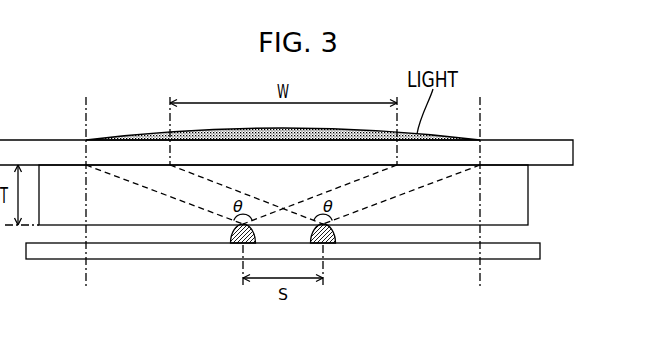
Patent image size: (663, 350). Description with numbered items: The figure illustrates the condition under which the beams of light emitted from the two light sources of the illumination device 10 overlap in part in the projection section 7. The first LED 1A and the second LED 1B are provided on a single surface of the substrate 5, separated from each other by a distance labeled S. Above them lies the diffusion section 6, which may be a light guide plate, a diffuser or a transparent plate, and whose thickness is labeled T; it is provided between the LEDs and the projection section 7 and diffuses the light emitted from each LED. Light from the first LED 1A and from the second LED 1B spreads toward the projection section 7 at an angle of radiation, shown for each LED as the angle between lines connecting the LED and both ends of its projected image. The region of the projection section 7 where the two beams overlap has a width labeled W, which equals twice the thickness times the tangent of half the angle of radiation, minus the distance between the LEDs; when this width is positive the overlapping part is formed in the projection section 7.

The illumination device 10 is at (547, 102).
The projection section 7 is at (574, 152).
The diffusion section 6 is at (529, 193).
The substrate 5 is at (541, 250).
The first light emitting diode 1A is at (230, 241).
The second light emitting diode 1B is at (337, 241).